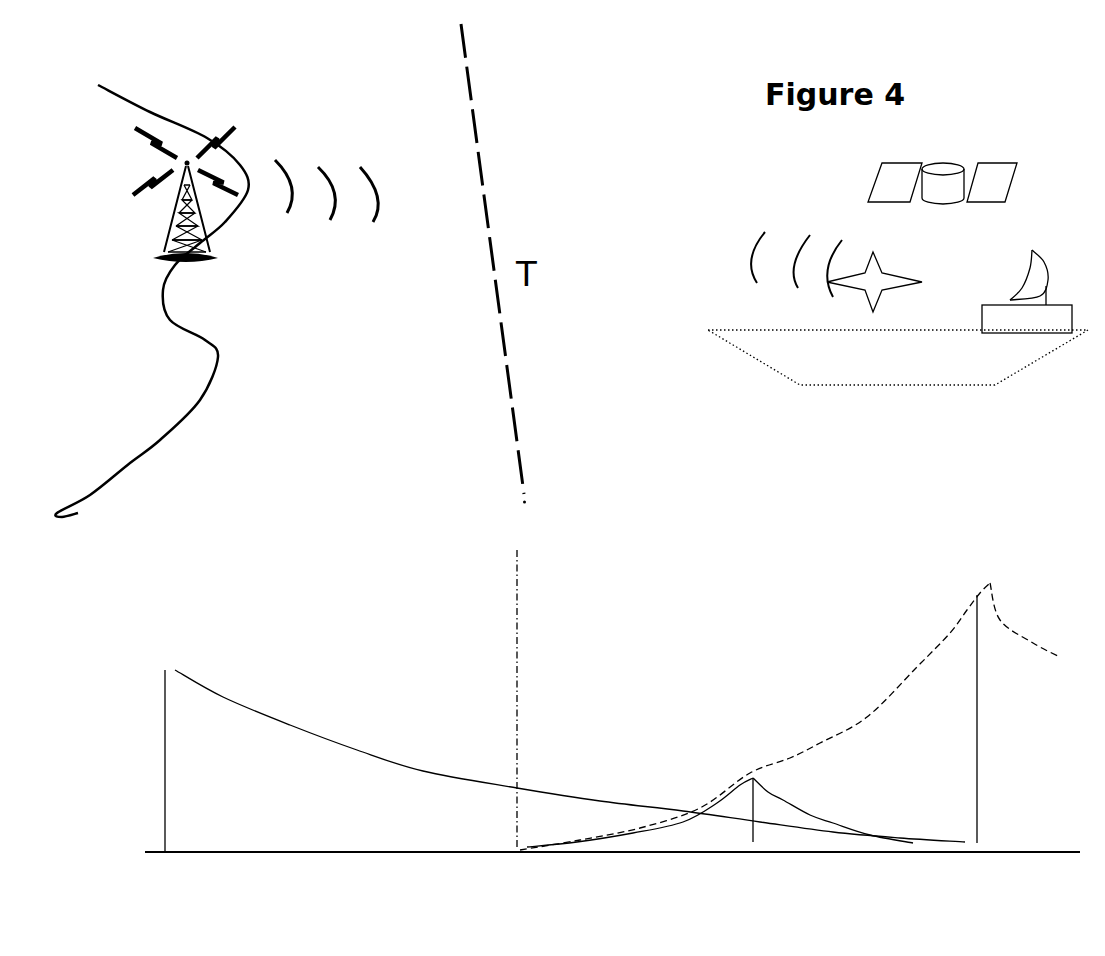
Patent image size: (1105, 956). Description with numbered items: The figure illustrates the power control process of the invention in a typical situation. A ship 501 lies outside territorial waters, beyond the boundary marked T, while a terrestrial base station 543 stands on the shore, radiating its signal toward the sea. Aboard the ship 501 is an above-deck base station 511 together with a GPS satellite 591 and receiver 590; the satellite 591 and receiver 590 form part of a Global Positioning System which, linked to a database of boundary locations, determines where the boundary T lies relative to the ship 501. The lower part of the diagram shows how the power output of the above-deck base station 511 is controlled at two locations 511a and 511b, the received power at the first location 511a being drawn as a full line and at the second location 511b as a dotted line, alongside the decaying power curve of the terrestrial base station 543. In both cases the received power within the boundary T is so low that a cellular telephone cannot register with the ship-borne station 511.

The terrestrial base station 543 is at (534, 489).
The GPS satellite 591 is at (942, 176).
The receiver 590 is at (1000, 297).
The above-deck base station 511 is at (840, 318).
The ship 501 is at (894, 360).
The first location 511a is at (720, 798).
The second location 511b is at (790, 716).